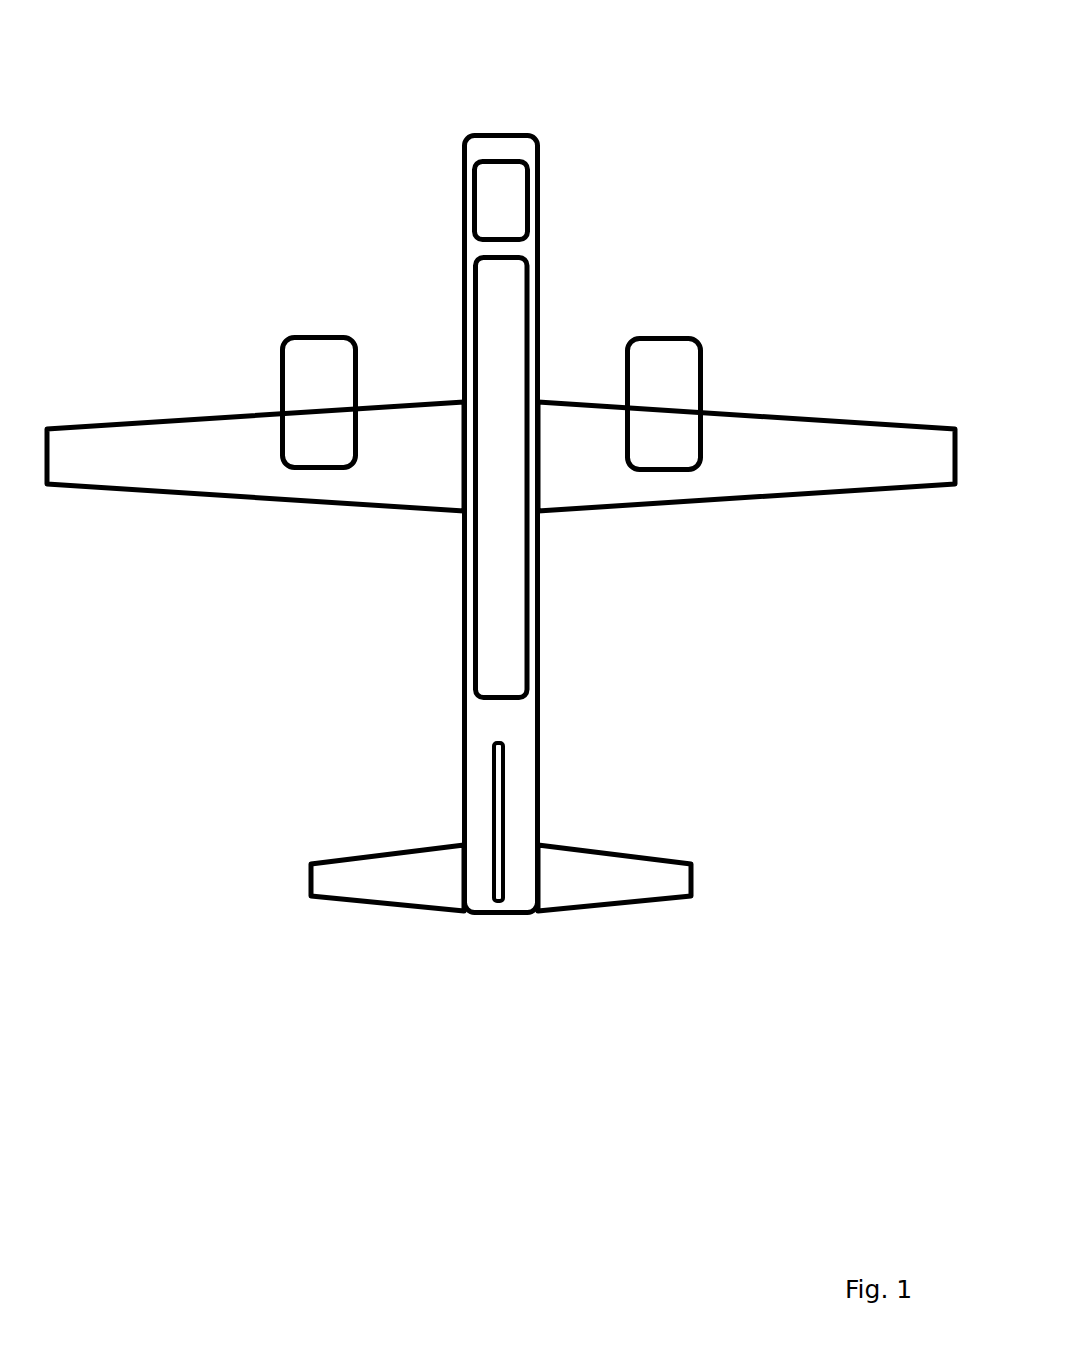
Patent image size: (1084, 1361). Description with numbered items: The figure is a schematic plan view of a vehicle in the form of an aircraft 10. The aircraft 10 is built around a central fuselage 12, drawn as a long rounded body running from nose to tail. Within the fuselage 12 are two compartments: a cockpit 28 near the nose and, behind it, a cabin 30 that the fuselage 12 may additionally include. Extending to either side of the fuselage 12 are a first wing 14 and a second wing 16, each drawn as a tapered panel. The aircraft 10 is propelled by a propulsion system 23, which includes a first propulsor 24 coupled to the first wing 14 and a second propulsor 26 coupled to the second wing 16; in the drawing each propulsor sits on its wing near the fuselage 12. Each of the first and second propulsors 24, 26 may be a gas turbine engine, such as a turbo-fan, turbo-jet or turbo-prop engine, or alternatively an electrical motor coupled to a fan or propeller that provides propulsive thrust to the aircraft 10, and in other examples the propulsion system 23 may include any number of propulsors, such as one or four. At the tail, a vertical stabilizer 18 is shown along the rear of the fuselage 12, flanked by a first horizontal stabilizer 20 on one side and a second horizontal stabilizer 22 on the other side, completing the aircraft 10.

The aircraft 10 is at (272, 108).
The fuselage 12 is at (542, 616).
The first wing 14 is at (223, 498).
The second wing 16 is at (807, 497).
The vertical stabilizer 18 is at (507, 783).
The first horizontal stabilizer 20 is at (380, 907).
The second horizontal stabilizer 22 is at (620, 907).
The propulsion system 23 is at (235, 253).
The first propulsor 24 is at (278, 352).
The second propulsor 26 is at (702, 340).
The cockpit 28 is at (507, 205).
The cabin 30 is at (498, 523).